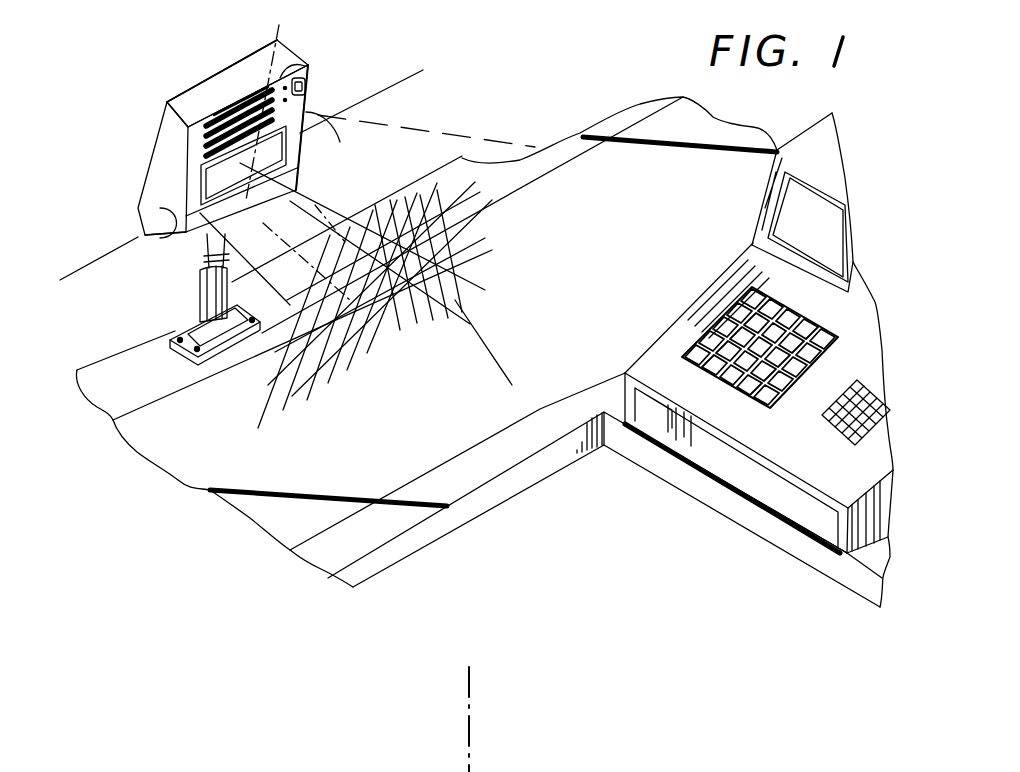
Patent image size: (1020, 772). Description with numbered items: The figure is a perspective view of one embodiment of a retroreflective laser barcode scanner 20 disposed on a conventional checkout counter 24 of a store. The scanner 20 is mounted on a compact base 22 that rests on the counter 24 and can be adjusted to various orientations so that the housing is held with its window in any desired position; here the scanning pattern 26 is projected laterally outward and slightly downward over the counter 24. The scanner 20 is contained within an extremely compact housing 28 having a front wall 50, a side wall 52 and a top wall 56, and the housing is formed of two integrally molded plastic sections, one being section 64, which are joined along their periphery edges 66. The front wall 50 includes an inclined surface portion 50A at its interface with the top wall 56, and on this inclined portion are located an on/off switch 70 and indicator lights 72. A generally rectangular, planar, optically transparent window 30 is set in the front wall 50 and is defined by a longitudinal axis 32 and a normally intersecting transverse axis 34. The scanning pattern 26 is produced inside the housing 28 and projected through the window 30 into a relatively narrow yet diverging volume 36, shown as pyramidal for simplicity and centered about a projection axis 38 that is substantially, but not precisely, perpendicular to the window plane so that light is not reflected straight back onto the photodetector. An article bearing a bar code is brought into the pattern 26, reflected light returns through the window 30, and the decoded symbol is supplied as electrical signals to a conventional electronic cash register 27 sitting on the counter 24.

The scanner 20 is at (297, 152).
The base 22 is at (188, 308).
The counter 24 is at (627, 251).
The scanning pattern 26 is at (476, 259).
The electronic cash register 27 is at (806, 447).
The housing 28 is at (318, 112).
The window 30 is at (284, 184).
The longitudinal axis 32 is at (281, 32).
The transverse axis 34 is at (423, 70).
The diverging volume 36 is at (422, 400).
The projection axis 38 is at (488, 368).
The front wall 50 is at (228, 190).
The inclined surface portion 50A is at (304, 92).
The side wall 52 is at (150, 180).
The top wall 56 is at (223, 80).
The plastic section 64 is at (188, 90).
The periphery edges 66 is at (152, 244).
The on/off switch 70 is at (306, 89).
The indicator lights 72 is at (280, 66).